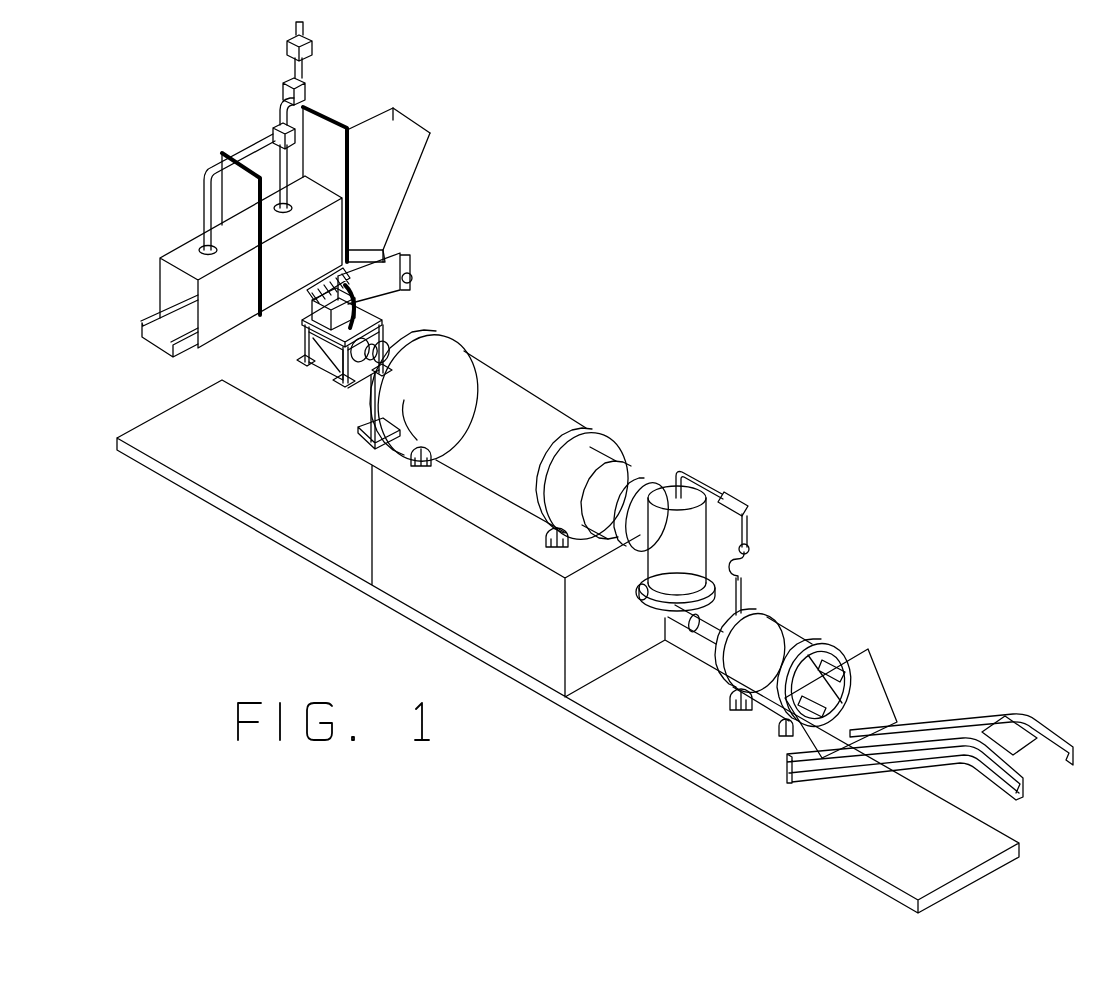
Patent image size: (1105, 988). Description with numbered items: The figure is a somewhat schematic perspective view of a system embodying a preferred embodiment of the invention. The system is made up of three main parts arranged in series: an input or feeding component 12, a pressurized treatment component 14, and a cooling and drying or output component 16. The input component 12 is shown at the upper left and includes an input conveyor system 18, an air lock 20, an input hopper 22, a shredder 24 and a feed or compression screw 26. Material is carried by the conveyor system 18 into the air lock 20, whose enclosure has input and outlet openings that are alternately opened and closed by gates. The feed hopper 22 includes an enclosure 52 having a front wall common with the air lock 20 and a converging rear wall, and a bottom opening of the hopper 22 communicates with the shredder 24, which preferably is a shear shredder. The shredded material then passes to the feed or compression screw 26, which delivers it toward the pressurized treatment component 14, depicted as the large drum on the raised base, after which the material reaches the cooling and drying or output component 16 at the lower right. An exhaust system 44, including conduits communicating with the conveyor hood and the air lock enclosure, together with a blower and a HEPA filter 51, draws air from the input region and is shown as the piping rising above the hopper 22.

The input or feeding component 12 is at (397, 227).
The pressurized treatment component 14 is at (465, 330).
The cooling and drying or output component 16 is at (769, 602).
The input conveyor system 18 is at (150, 346).
The air lock 20 is at (334, 104).
The input hopper 22 is at (420, 152).
The shredder 24 is at (412, 264).
The feed or compression screw 26 is at (284, 348).
The exhaust system 44 is at (274, 107).
The HEPA filter 51 is at (264, 127).
The enclosure 52 is at (394, 187).